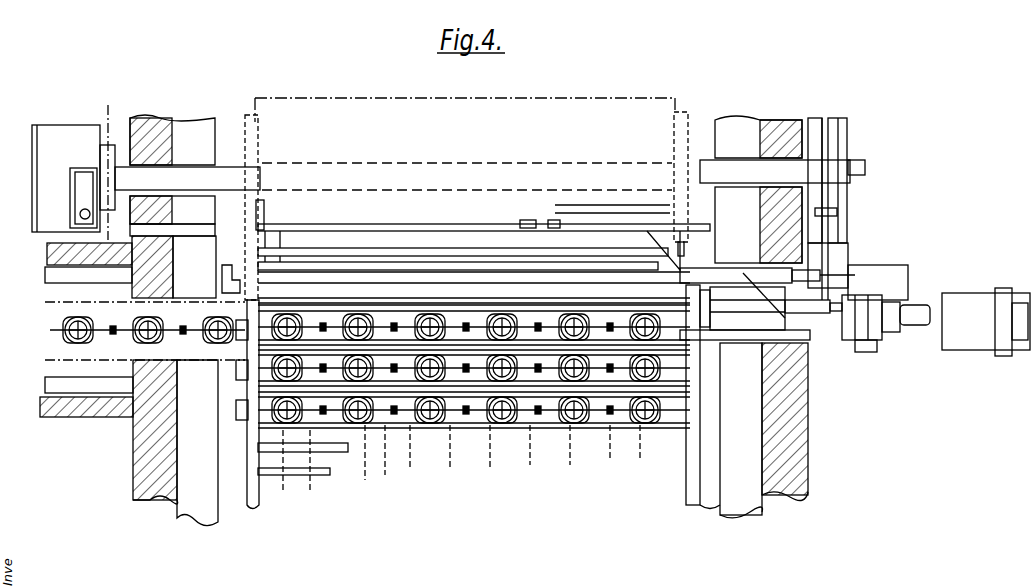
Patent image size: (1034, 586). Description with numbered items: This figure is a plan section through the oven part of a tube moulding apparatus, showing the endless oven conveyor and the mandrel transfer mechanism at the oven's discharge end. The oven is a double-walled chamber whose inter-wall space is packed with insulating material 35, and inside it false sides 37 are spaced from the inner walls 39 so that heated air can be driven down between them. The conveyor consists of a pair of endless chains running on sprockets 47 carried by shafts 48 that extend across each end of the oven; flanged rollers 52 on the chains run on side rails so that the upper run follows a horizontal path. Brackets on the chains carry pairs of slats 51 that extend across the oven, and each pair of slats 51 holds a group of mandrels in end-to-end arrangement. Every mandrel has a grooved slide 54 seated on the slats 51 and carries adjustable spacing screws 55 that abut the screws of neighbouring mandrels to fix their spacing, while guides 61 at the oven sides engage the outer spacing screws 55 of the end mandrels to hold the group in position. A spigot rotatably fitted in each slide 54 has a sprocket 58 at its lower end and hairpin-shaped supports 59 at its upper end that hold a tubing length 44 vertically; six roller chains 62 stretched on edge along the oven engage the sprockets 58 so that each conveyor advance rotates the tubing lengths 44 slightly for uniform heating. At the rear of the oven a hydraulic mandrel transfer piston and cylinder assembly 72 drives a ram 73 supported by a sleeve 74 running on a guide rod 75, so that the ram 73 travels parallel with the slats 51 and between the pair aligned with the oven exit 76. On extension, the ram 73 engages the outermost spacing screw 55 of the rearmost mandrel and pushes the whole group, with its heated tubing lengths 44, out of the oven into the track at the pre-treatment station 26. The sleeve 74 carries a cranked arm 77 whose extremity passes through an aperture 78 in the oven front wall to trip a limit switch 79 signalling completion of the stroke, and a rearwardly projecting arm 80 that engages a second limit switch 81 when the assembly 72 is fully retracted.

The pre-treatment station 26 is at (78, 368).
The insulating material 35 is at (133, 410).
The false sides 37 is at (215, 440).
The inner walls 39 is at (175, 425).
The tubing length 44 is at (583, 425).
The sprockets 47 is at (254, 152).
The shafts 48 is at (366, 183).
The slats 51 is at (323, 232).
The flanged roller 52 is at (259, 212).
The slide 54 is at (526, 423).
The spacing screws 55 is at (469, 428).
The sprocket 58 is at (362, 432).
The hairpin-shaped supports 59 is at (423, 428).
The guides 61 is at (260, 488).
The roller chains 62 is at (312, 482).
The hydraulic mandrel transfer piston and cylinder assembly 72 is at (968, 310).
The ram 73 is at (682, 295).
The sleeve 74 is at (806, 345).
The guide rod 75 is at (408, 280).
The oven exit 76 is at (237, 344).
The cranked arm 77 is at (594, 225).
The aperture 78 is at (184, 236).
The limit switch 79 is at (80, 214).
The rearwardly projecting arm 80 is at (843, 290).
The limit switch 81 is at (885, 285).